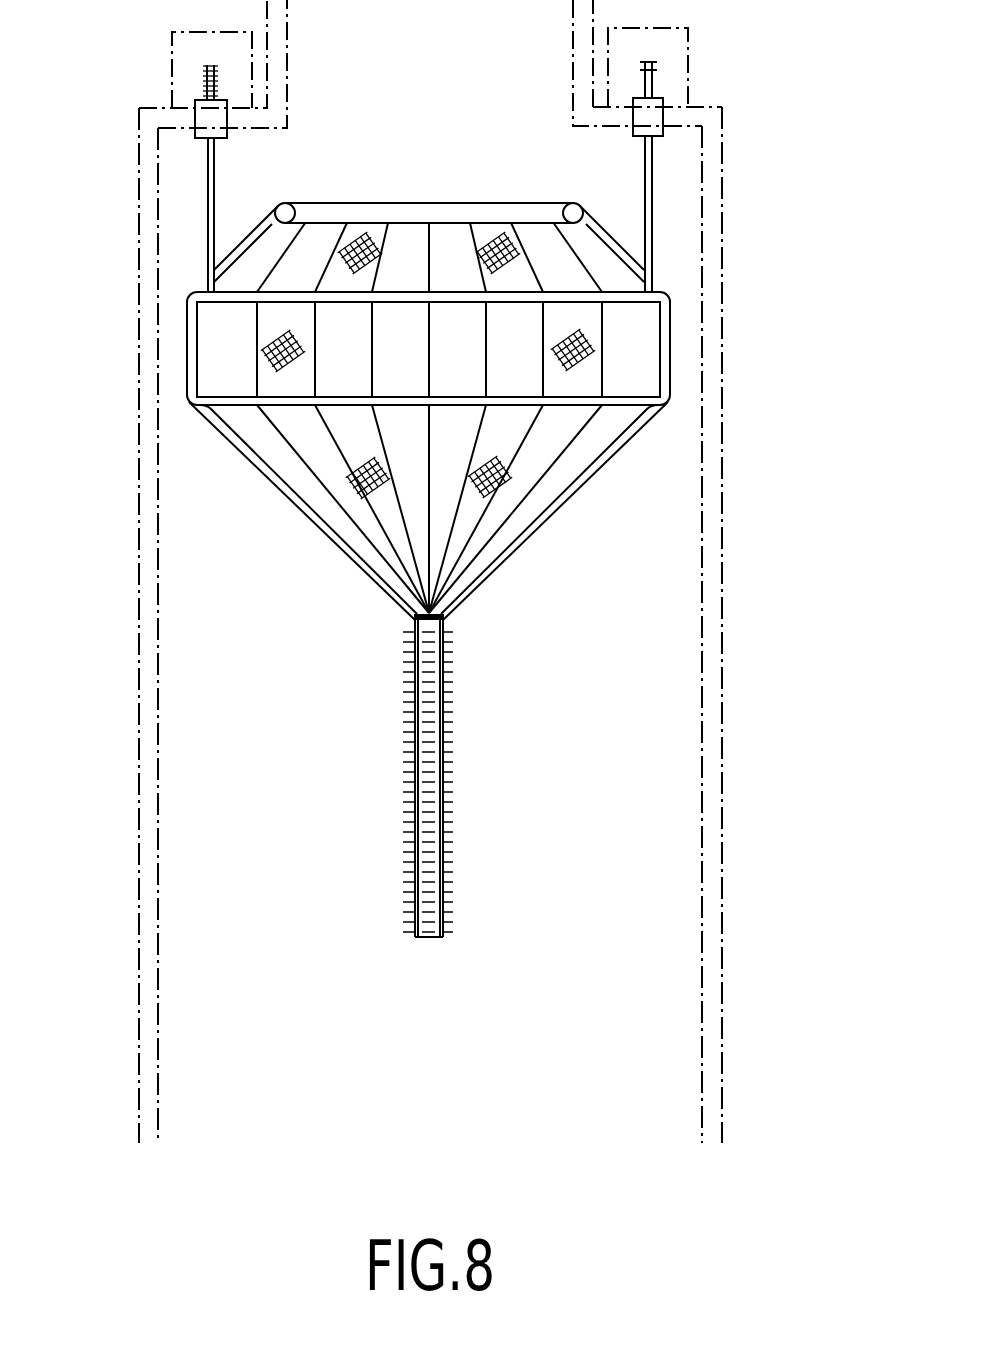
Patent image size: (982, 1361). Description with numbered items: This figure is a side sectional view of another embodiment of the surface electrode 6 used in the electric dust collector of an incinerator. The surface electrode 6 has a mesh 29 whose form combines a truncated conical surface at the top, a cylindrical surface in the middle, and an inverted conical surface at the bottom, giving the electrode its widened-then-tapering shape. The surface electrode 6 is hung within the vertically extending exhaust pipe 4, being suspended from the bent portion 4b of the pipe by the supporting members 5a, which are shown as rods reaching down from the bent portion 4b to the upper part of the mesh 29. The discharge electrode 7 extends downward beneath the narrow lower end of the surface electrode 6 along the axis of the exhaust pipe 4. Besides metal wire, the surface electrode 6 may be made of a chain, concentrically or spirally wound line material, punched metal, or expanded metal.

The exhaust pipe 4 is at (720, 575).
The bent portion 4b is at (153, 108).
The supporting members 5a is at (214, 178).
The surface electrode 6 is at (445, 225).
The discharge electrode 7 is at (443, 740).
The mesh 29 is at (652, 352).